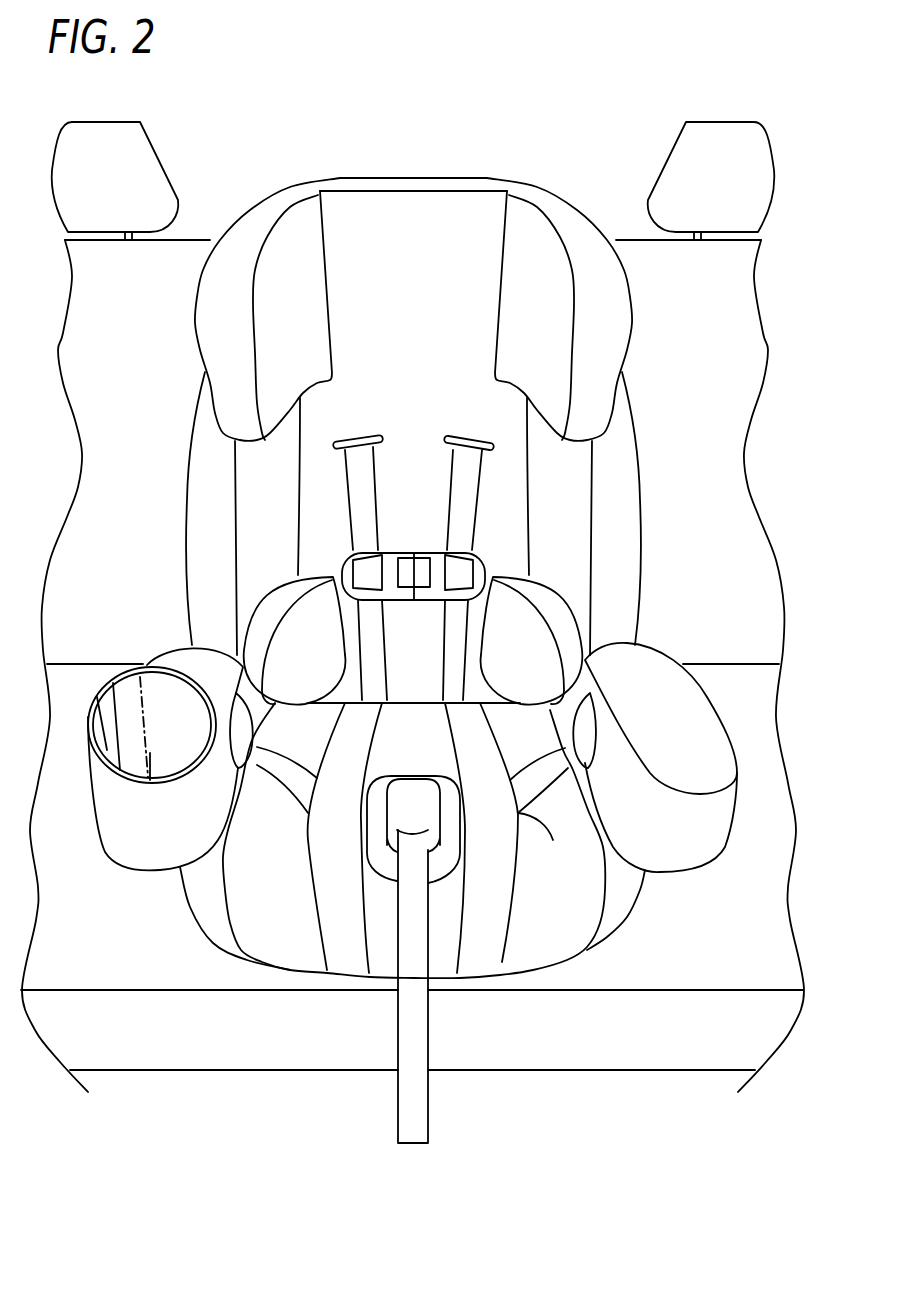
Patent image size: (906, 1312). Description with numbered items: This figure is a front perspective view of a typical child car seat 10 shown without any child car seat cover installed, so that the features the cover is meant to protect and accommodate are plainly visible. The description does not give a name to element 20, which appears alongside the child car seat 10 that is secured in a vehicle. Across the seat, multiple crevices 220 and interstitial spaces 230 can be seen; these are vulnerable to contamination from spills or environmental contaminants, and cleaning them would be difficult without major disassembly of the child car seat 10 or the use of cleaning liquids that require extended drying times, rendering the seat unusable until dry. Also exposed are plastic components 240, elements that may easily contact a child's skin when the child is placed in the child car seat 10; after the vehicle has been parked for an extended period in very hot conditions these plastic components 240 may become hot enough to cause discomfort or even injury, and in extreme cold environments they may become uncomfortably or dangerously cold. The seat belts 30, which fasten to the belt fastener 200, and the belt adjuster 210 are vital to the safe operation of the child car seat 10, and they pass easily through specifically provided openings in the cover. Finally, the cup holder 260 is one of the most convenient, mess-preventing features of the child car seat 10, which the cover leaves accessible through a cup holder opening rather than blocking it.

The child car seat 10 is at (412, 577).
The vehicle seat 20 is at (113, 458).
The seat belt 30 is at (450, 467).
The belt fastener 200 is at (430, 545).
The belt adjuster 210 is at (428, 913).
The crevices 220 is at (422, 700).
The interstitial spaces 230 is at (303, 573).
The plastic components 240 is at (412, 765).
The cup holder 260 is at (172, 705).